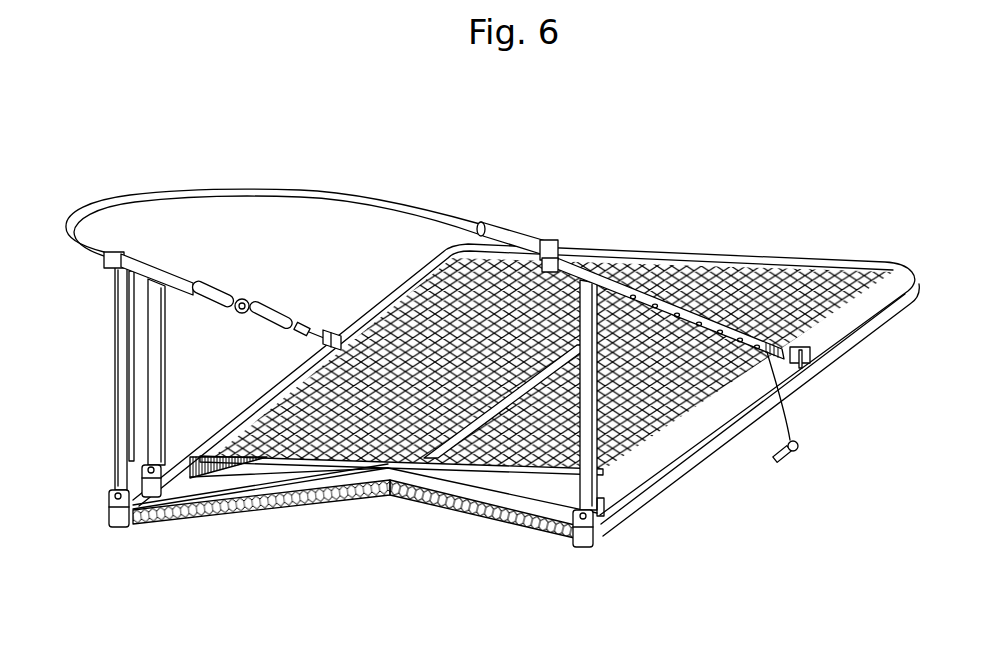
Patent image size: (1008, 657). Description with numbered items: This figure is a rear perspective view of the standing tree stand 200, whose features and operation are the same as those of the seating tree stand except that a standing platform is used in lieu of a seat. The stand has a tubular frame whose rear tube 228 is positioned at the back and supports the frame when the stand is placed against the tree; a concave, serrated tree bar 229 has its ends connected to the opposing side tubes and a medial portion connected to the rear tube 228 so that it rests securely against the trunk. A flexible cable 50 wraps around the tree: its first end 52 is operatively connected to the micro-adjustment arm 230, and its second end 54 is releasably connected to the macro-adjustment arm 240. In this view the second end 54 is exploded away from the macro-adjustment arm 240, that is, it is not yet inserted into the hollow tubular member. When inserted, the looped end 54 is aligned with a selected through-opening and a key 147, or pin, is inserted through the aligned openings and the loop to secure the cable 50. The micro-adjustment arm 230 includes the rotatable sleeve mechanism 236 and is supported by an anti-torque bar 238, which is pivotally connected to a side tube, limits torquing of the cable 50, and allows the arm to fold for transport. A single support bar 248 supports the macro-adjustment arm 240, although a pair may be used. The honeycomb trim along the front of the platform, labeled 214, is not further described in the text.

The cable 50 is at (167, 198).
The first end of the cable 52 is at (106, 262).
The second end of the cable 54 is at (510, 233).
The key 147 is at (798, 450).
The standing tree stand 200 is at (533, 158).
The front rail honeycomb section 214 is at (290, 507).
The rear tube 228 is at (497, 483).
The serrated tree bar 229 is at (395, 487).
The micro-adjustment arm 230 is at (232, 274).
The rotatable sleeve mechanism 236 is at (263, 301).
The anti-torque bar 238 is at (158, 330).
The macro-adjustment arm 240 is at (724, 295).
The support bar 248 is at (587, 452).